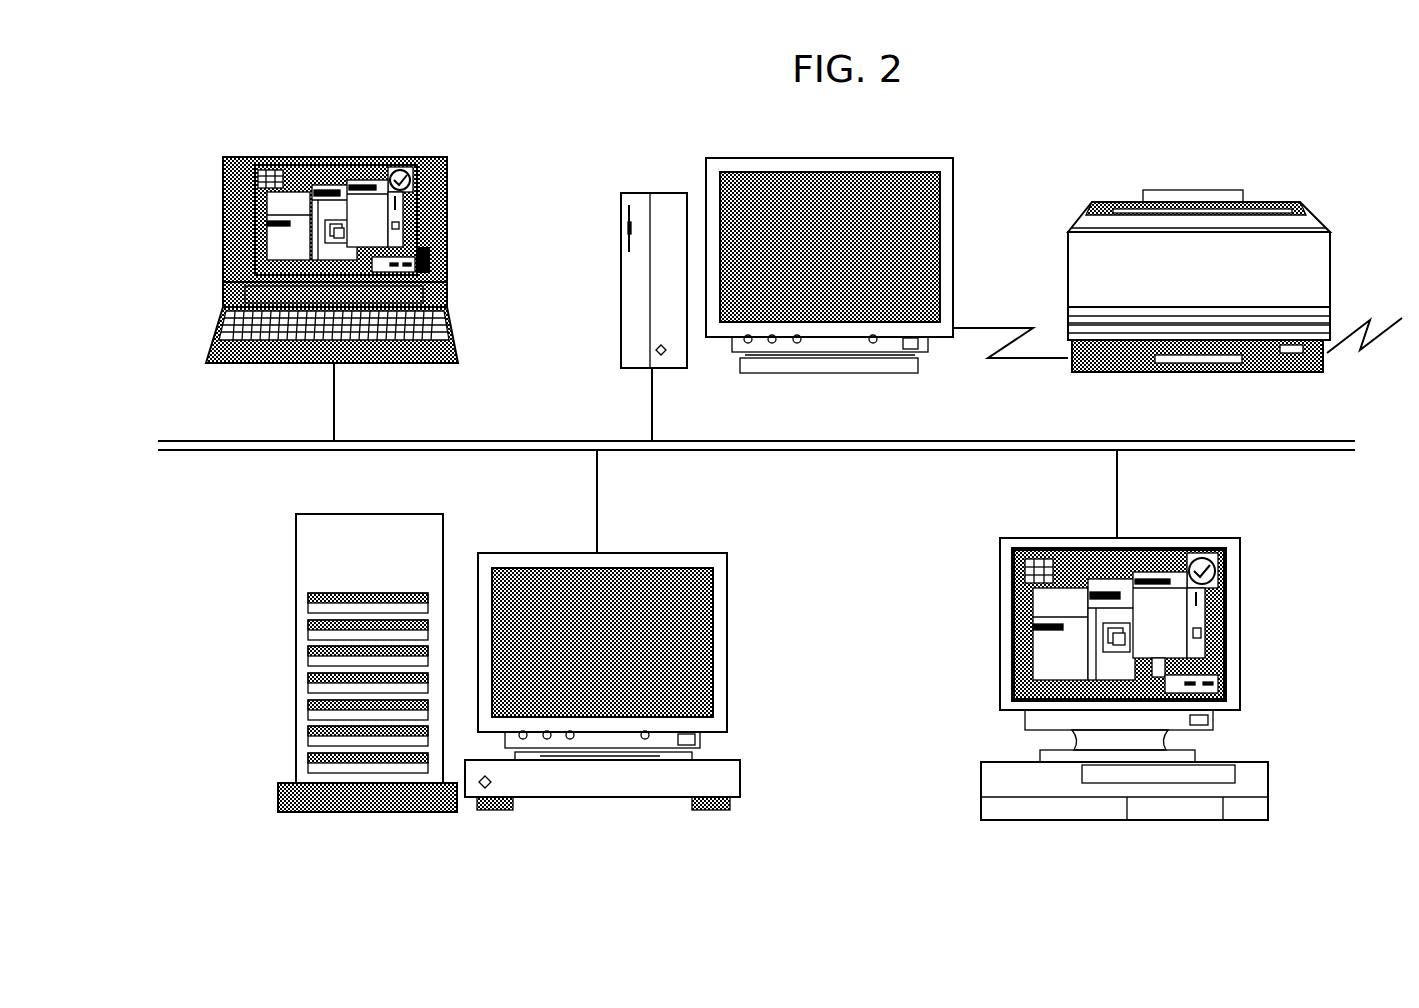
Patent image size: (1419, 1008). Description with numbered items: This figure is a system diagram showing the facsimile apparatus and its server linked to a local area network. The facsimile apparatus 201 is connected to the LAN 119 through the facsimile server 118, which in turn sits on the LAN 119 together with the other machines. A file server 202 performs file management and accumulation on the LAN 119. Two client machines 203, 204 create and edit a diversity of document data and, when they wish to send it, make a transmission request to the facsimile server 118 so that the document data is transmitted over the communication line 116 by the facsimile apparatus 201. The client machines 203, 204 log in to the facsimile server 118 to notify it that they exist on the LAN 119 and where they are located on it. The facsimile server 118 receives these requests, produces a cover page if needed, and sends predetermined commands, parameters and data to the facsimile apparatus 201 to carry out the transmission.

The communication line 116 is at (1365, 319).
The facsimile server 118 is at (643, 188).
The LAN (Local Area Network) 119 is at (1277, 450).
The facsimile apparatus 201 is at (1078, 224).
The file server 202 is at (370, 812).
The client machine 203 is at (262, 157).
The client machine 204 is at (1068, 820).